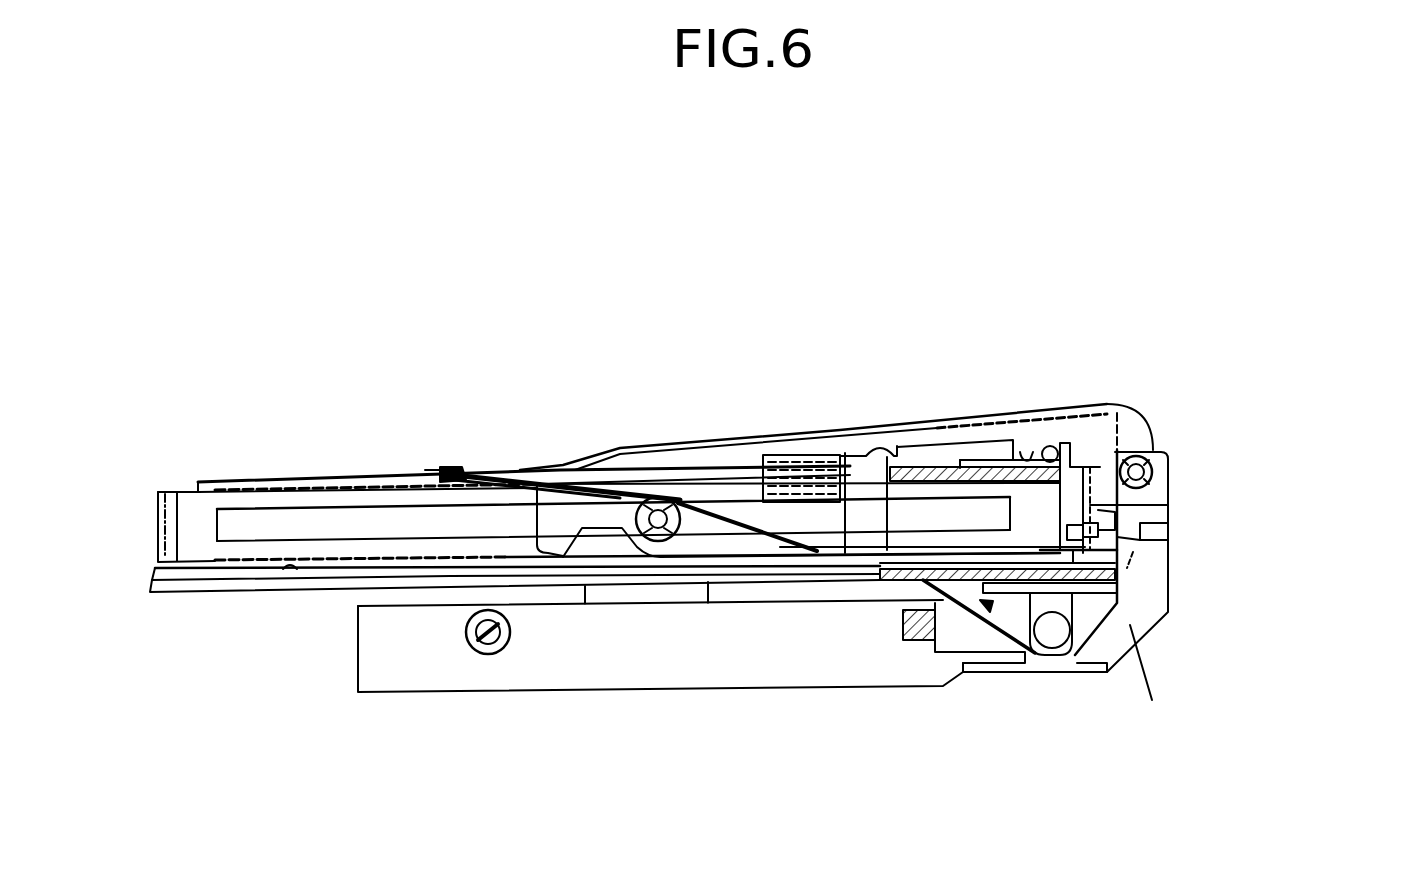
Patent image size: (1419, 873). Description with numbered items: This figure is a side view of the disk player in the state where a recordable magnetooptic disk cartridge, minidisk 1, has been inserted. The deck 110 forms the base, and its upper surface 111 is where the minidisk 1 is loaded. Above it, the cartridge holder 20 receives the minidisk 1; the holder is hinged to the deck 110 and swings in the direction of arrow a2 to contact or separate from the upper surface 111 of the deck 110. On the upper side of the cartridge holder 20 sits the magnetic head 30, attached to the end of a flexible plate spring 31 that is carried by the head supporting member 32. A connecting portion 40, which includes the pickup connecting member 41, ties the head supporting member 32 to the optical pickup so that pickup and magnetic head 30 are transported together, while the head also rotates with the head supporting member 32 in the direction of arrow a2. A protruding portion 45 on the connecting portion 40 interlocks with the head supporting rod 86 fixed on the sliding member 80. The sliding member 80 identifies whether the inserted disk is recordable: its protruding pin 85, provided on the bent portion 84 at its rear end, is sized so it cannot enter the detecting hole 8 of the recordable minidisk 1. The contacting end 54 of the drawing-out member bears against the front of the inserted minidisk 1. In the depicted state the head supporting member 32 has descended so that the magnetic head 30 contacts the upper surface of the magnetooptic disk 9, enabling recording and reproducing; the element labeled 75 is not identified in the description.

The rotation direction arrow a2 is at (123, 400).
The minidisk 1 is at (190, 492).
The cartridge holder 20 is at (250, 476).
The magnetooptic disk 9 is at (320, 506).
The magnetic head 30 is at (625, 490).
The flexible plate spring 31 is at (680, 496).
The head supporting member 32 is at (800, 436).
The sliding member 80 is at (933, 465).
The protruding portion 45 is at (1020, 452).
The head supporting rod 86 is at (1052, 450).
The connecting portion 40 is at (1160, 430).
The bent portion 84 is at (1290, 455).
The contacting end 54 is at (1107, 505).
The pickup connecting member 41 is at (1133, 630).
The protruding pin 85 is at (1077, 555).
The detecting hole 8 is at (1050, 552).
The link arm 75 is at (1007, 610).
The deck 110 is at (200, 597).
The upper surface 111 is at (290, 572).